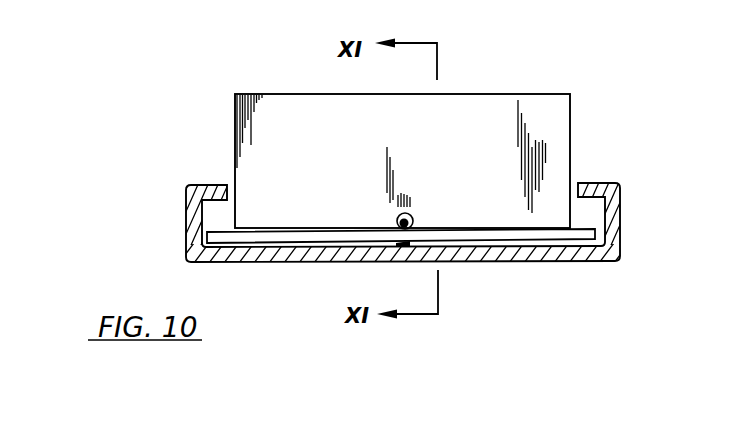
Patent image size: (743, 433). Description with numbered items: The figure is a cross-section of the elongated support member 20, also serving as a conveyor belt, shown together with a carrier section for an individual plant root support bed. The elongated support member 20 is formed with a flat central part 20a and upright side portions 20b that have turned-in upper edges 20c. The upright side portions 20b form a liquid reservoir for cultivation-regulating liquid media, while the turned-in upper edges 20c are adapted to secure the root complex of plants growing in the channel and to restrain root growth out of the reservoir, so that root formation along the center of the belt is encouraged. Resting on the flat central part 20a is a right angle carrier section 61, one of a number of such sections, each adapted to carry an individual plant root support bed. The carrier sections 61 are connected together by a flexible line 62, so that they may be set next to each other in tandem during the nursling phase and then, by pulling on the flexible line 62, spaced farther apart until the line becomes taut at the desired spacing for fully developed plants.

The right angle carrier section 61 is at (502, 102).
The flexible line 62 is at (397, 244).
The elongated support member 20 is at (499, 266).
The flat central part 20a is at (583, 266).
The upright side portion 20b is at (198, 222).
The turned-in upper edge 20c is at (602, 183).